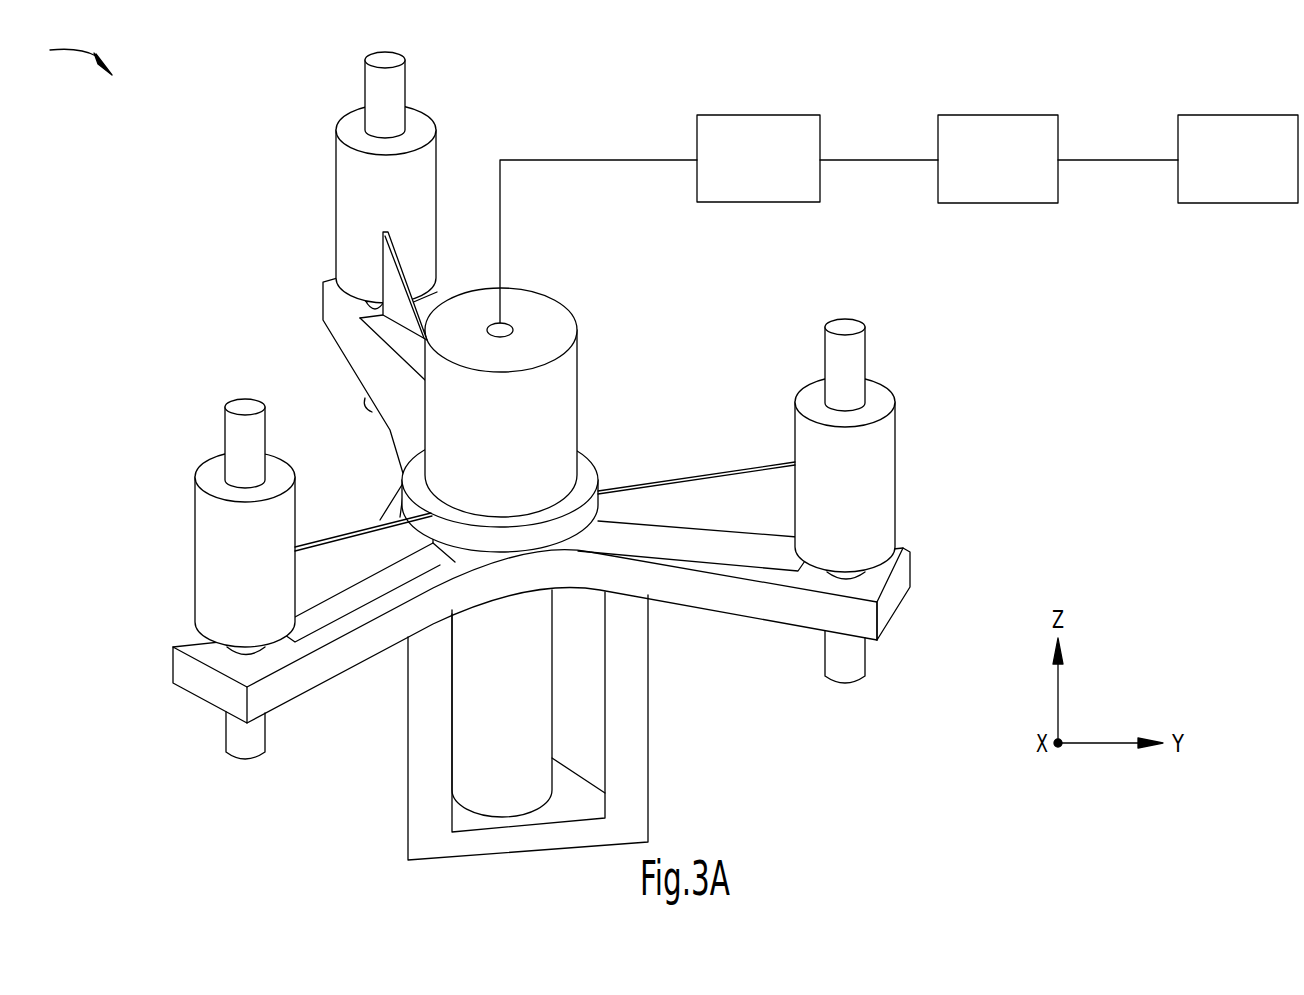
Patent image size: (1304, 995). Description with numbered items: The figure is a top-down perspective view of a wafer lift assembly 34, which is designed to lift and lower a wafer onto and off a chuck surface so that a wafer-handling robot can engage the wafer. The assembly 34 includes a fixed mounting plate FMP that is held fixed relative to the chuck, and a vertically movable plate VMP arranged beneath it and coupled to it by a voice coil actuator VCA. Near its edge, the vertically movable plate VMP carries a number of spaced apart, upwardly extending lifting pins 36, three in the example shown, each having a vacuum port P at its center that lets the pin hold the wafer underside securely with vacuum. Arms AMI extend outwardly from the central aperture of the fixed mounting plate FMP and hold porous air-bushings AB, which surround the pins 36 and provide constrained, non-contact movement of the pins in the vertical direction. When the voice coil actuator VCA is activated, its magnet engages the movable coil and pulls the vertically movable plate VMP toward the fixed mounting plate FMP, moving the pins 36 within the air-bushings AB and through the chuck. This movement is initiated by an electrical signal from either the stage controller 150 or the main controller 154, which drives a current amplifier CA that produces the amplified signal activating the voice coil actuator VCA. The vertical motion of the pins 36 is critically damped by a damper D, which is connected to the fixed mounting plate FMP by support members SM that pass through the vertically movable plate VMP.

The wafer lift assembly 34 is at (70, 55).
The lifting pins 36 is at (534, 337).
The vacuum ports P is at (378, 52).
The porous air-bushings AB is at (337, 195).
The arms AMI is at (393, 283).
The fixed mounting plate FMP is at (398, 368).
The voice coil actuator VCA is at (578, 400).
The vertically movable plate VMP is at (800, 612).
The damper D is at (552, 688).
The support members SM is at (408, 733).
The current amplifier CA is at (772, 176).
The stage controller 150 is at (1018, 176).
The main controller 154 is at (1258, 176).